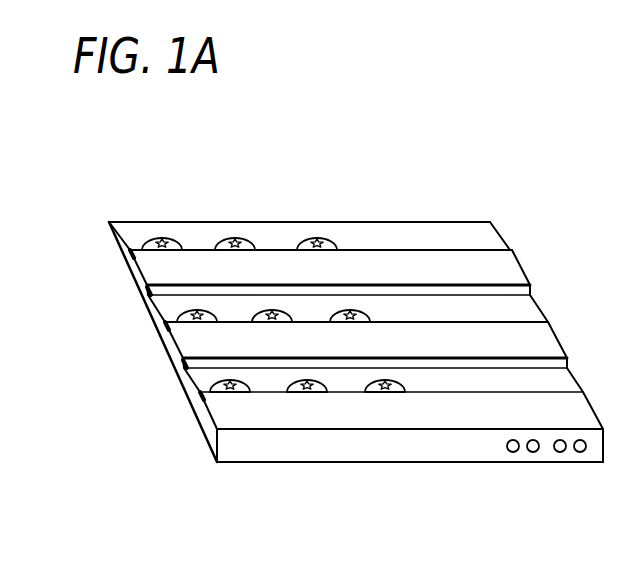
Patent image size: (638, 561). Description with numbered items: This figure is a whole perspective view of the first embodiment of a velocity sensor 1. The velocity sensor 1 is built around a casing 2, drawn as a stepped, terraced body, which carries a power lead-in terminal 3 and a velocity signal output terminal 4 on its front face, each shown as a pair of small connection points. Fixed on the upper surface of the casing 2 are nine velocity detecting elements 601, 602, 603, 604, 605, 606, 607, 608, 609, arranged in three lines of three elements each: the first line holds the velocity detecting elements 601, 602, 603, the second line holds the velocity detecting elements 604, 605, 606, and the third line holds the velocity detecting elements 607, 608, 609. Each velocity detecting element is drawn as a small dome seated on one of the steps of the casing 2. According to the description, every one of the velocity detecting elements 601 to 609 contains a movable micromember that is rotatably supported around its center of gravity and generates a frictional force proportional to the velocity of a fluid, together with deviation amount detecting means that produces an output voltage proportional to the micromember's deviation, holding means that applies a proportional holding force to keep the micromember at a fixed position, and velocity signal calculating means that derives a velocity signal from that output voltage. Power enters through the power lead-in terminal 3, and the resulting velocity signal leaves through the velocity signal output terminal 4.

The velocity sensor 1 is at (191, 214).
The casing 2 is at (514, 262).
The power lead-in terminal 3 is at (533, 452).
The velocity signal output terminal 4 is at (560, 452).
The velocity detecting element 601 is at (158, 238).
The velocity detecting element 602 is at (242, 239).
The velocity detecting element 603 is at (330, 239).
The velocity detecting element 604 is at (181, 312).
The velocity detecting element 605 is at (270, 311).
The velocity detecting element 606 is at (362, 312).
The velocity detecting element 607 is at (215, 385).
The velocity detecting element 608 is at (290, 383).
The velocity detecting element 609 is at (368, 382).